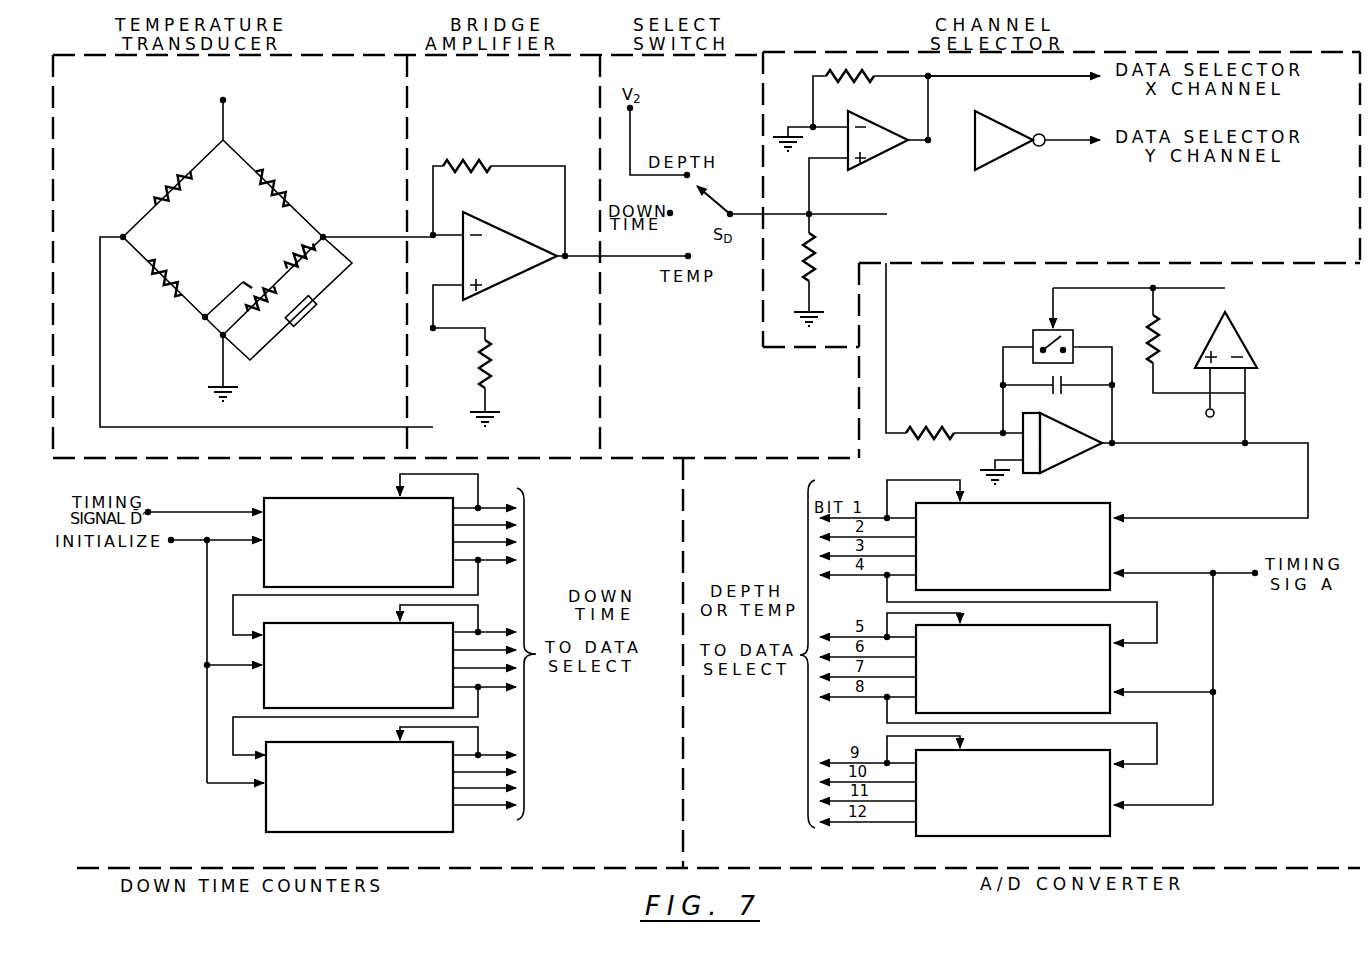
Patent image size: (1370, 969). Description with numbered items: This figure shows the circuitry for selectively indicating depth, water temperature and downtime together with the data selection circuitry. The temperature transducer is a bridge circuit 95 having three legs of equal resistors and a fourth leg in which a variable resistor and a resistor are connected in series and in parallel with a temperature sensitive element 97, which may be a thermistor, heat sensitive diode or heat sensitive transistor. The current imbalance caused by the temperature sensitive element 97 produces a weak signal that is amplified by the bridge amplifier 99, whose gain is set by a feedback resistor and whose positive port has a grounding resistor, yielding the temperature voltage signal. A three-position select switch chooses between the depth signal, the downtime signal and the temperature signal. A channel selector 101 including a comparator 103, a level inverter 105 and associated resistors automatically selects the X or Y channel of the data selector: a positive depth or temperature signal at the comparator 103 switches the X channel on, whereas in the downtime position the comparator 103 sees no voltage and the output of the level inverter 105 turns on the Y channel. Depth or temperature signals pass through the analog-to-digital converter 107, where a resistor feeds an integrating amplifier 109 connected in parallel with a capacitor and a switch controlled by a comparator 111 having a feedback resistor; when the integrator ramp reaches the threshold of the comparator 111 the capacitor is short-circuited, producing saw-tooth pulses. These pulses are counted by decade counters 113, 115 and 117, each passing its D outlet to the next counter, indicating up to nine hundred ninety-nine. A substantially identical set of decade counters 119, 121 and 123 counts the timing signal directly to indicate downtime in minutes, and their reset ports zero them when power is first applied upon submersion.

The bridge circuit 95 is at (344, 111).
The temperature sensitive element 97 is at (307, 318).
The bridge amplifier 99 is at (508, 266).
The channel selector 101 is at (1240, 238).
The comparator 103 is at (888, 144).
The level inverter 105 is at (1000, 128).
The analog-to-digital converter 107 is at (1292, 303).
The integrating amplifier 109 is at (1072, 448).
The comparator 111 is at (1238, 338).
The decade counter 113 is at (1097, 538).
The decade counter 115 is at (1097, 662).
The decade counter 117 is at (1097, 780).
The decade counter 119 is at (263, 567).
The decade counter 121 is at (263, 680).
The decade counter 123 is at (262, 810).